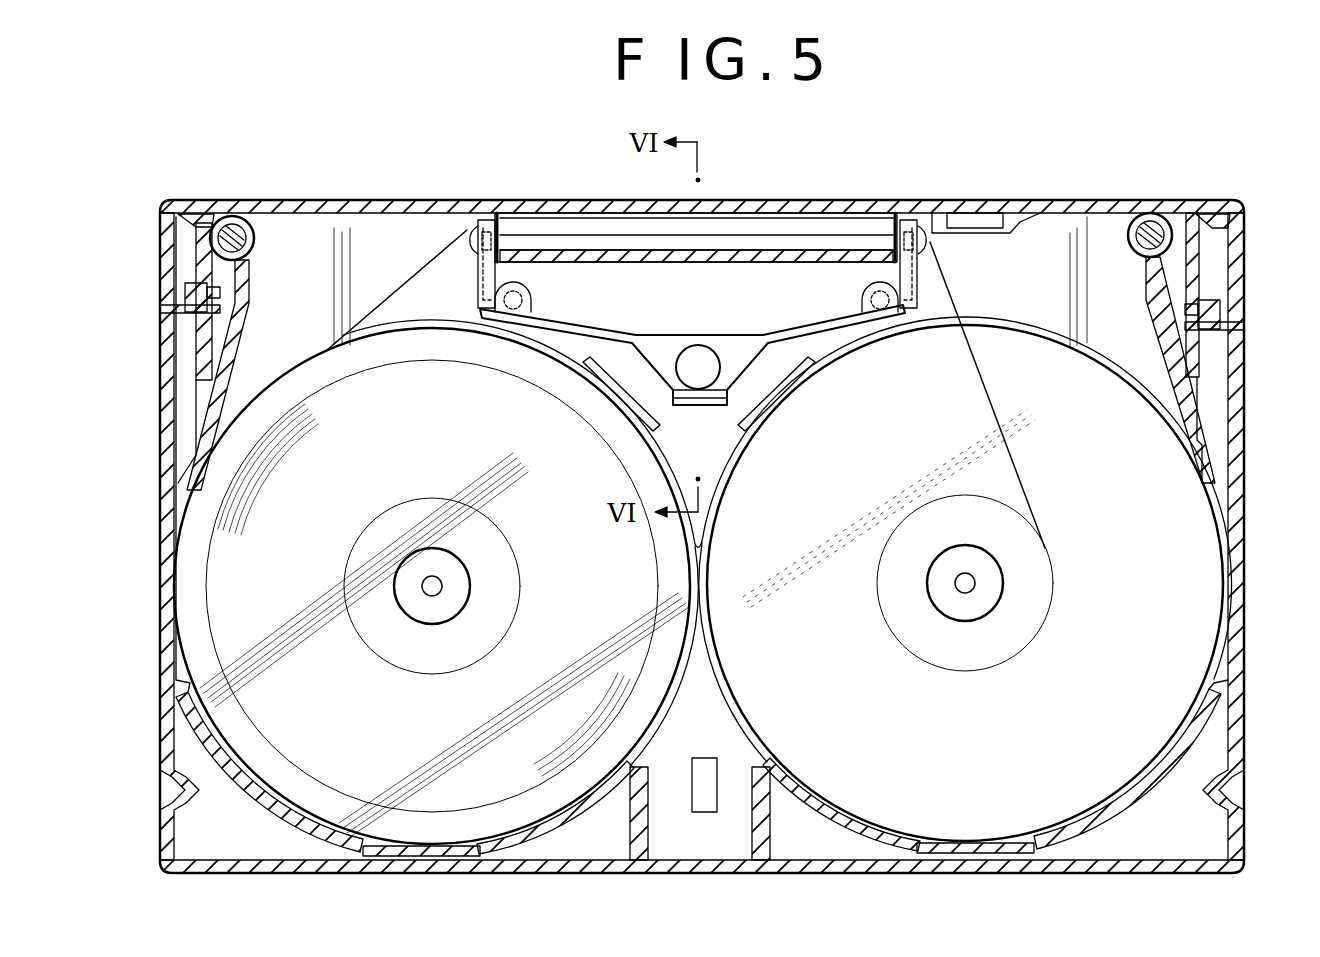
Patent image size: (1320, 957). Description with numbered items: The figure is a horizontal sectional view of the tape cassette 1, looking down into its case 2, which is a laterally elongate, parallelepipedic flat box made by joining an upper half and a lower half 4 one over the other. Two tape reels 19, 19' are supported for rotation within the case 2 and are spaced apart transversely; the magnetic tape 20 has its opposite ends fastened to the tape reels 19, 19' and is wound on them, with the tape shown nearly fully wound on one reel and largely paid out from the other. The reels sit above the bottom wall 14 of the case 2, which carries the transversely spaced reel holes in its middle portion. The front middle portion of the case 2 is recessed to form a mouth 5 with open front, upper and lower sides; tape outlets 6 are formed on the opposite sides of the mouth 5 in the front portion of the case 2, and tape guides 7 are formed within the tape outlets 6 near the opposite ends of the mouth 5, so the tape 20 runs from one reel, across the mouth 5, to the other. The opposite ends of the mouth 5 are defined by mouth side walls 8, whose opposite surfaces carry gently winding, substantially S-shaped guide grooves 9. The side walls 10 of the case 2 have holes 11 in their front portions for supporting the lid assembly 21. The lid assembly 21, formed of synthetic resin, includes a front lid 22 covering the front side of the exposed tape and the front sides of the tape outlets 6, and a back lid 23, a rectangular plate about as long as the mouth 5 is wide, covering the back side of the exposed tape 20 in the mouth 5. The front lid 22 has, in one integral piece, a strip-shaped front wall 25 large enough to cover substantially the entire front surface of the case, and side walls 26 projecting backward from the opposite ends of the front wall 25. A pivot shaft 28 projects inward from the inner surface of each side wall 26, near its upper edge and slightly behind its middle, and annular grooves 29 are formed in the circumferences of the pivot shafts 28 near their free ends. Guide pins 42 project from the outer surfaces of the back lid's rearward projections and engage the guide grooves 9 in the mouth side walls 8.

The tape cassette 1 is at (1202, 178).
The case 2 is at (1240, 515).
The lower half 4 is at (1240, 640).
The mouth 5 is at (822, 313).
The tape outlets 6 is at (420, 240).
The tape guides 7 is at (468, 246).
The mouth side walls 8 is at (495, 264).
The guide grooves 9 is at (478, 300).
The side walls 10 is at (165, 526).
The holes 11 is at (248, 314).
The bottom wall 14 is at (722, 842).
The tape reel 19 is at (405, 810).
The tape reel 19' is at (992, 809).
The magnetic tape 20 is at (548, 213).
The lid assembly 21 is at (818, 213).
The front lid 22 is at (772, 213).
The back lid 23 is at (843, 247).
The front wall 25 is at (722, 213).
The side walls 26 is at (172, 248).
The pivot shaft 28 is at (183, 292).
The annular grooves 29 is at (192, 312).
The guide pins 42 is at (466, 252).